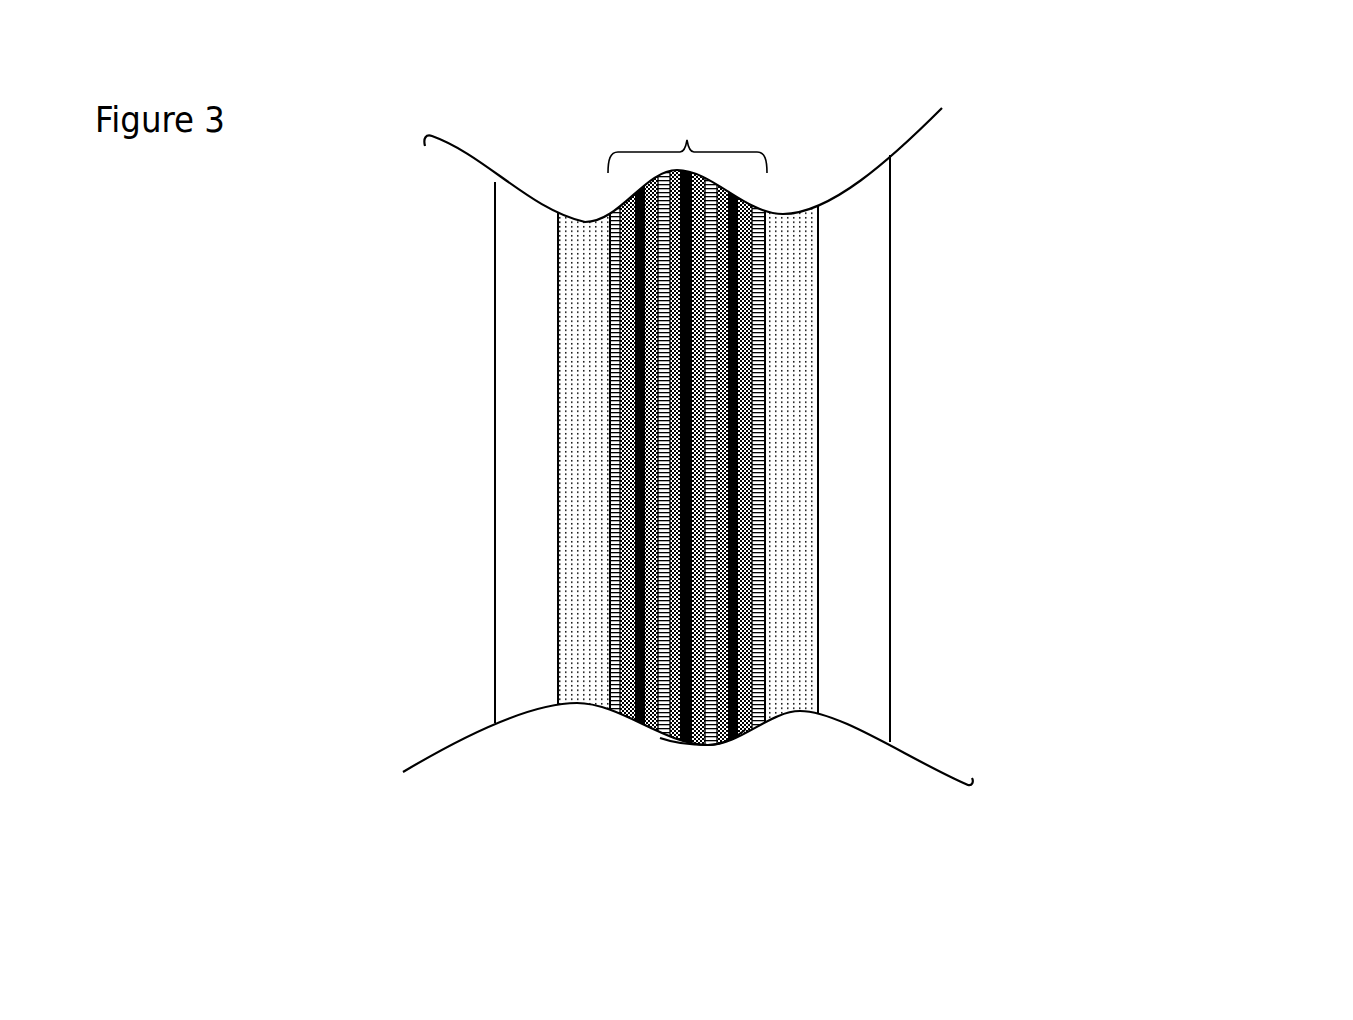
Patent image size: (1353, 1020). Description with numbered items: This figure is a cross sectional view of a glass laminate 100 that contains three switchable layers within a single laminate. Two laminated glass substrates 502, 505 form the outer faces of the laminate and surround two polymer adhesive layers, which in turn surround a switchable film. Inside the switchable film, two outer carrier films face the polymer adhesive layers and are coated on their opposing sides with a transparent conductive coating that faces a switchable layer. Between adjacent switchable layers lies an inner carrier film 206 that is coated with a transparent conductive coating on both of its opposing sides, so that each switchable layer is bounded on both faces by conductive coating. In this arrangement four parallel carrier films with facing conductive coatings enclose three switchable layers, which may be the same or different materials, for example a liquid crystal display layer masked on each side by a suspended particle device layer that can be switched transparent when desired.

The glass laminate 100 is at (1105, 226).
The inner carrier film 206 is at (712, 730).
The glass substrate 502 is at (520, 613).
The glass substrate 505 is at (843, 297).